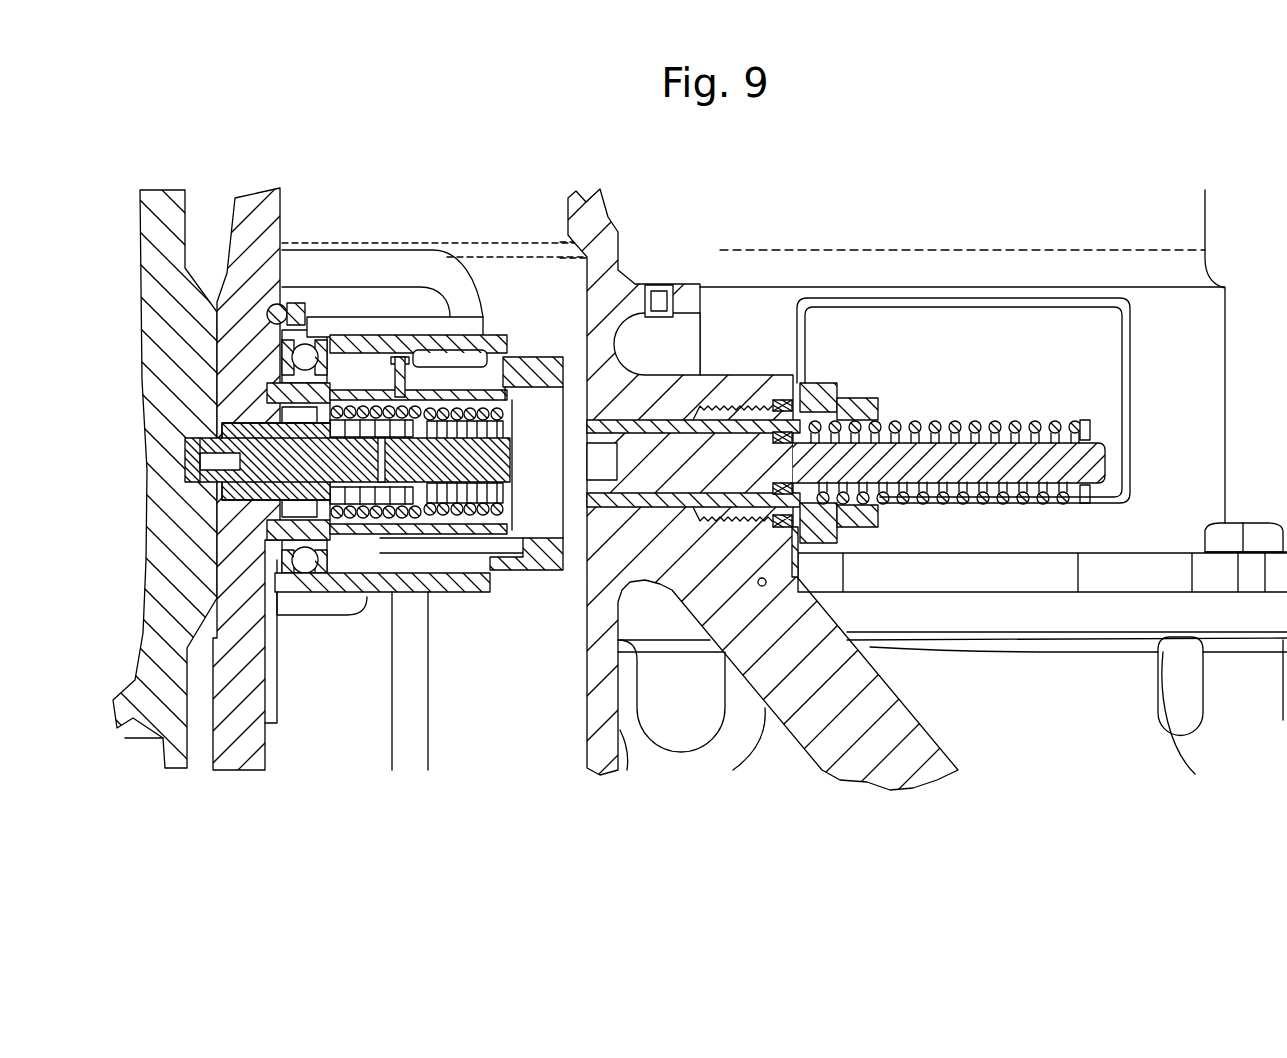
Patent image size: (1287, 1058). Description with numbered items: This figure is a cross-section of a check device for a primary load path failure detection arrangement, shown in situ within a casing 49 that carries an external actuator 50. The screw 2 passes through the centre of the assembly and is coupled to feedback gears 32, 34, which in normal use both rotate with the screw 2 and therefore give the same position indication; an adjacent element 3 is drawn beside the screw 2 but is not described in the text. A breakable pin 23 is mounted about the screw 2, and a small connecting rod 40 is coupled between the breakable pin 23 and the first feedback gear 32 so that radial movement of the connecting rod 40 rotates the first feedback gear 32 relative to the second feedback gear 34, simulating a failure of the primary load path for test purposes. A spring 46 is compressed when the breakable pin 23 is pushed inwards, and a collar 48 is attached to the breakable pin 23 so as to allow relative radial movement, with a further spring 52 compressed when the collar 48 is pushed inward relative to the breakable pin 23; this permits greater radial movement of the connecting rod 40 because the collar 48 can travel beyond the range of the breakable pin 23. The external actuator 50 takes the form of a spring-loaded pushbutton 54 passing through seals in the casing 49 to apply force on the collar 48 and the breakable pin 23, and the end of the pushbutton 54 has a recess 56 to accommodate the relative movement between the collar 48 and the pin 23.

The screw 2 is at (262, 222).
The housing wall 3 is at (183, 385).
The breakable pin 23 is at (265, 478).
The first feedback gear 32 is at (498, 343).
The second feedback gear 34 is at (468, 583).
The connecting rod 40 is at (380, 345).
The spring 46 is at (373, 500).
The collar 48 is at (515, 540).
The casing 49 is at (590, 215).
The external actuator 50 is at (906, 352).
The further spring 52 is at (520, 425).
The spring-loaded pushbutton 54 is at (747, 463).
The recess 56 is at (605, 458).